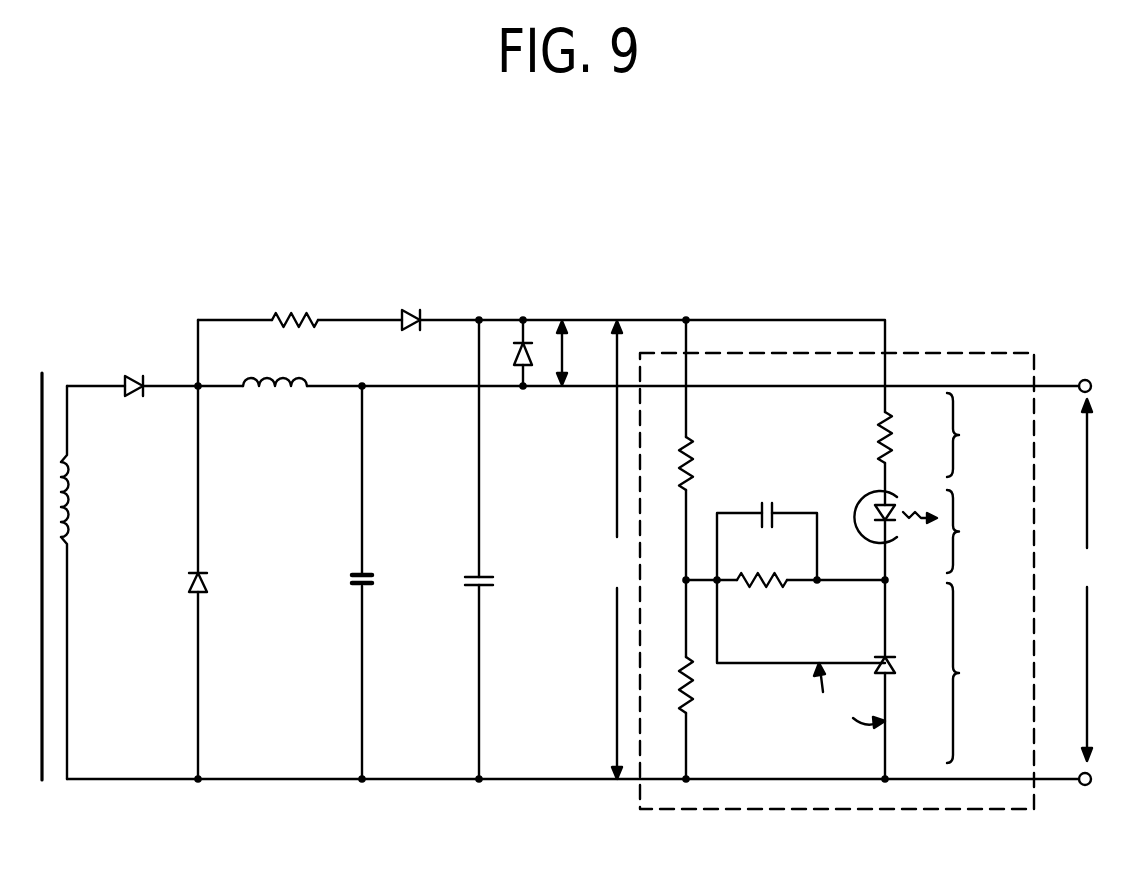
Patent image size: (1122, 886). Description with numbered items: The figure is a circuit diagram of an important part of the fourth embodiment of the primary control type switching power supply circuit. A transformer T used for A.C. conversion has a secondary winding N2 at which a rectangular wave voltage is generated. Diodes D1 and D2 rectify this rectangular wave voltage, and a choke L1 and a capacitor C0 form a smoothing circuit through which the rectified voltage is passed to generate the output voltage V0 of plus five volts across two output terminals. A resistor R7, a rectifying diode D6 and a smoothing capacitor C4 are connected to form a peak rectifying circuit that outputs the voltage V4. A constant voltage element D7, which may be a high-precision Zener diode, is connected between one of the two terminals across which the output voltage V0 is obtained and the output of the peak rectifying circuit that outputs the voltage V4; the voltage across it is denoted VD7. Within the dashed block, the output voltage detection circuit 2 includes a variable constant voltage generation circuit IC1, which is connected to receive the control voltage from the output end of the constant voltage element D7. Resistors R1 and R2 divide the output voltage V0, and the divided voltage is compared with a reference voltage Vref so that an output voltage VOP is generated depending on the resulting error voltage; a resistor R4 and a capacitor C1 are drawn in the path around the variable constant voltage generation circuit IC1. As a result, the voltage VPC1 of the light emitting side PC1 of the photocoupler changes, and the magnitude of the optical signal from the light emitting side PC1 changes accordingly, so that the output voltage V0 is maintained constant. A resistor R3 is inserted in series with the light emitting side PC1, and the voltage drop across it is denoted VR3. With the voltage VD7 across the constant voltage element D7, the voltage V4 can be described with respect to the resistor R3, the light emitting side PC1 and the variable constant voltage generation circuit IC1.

The output voltage detection circuit 2 is at (687, 811).
The transformer T is at (40, 558).
The secondary winding N2 is at (94, 582).
The diode D1 is at (109, 366).
The diode D2 is at (224, 580).
The choke L1 is at (275, 365).
The resistor R7 is at (295, 302).
The rectifying diode D6 is at (413, 304).
The constant voltage element D7 is at (534, 373).
The capacitor C0 is at (386, 580).
The smoothing capacitor C4 is at (500, 580).
The voltage across the constant voltage element VD7 is at (583, 353).
The output voltage of the peak rectifying circuit V4 is at (612, 550).
The resistor R1 is at (667, 463).
The resistor R2 is at (667, 683).
The resistor R4 is at (760, 564).
The capacitor C1 is at (762, 498).
The reference voltage Vref is at (822, 701).
The variable constant voltage generation circuit IC1 is at (910, 673).
The resistor R3 is at (907, 437).
The light emitting side of the photocoupler PC1 is at (897, 535).
The voltage drop across resistor R3 VR3 is at (981, 435).
The voltage of the light emitting side PC1 VPC1 is at (985, 531).
The output voltage of the operational amplifier VOP is at (982, 673).
The output voltage V0 is at (1082, 580).